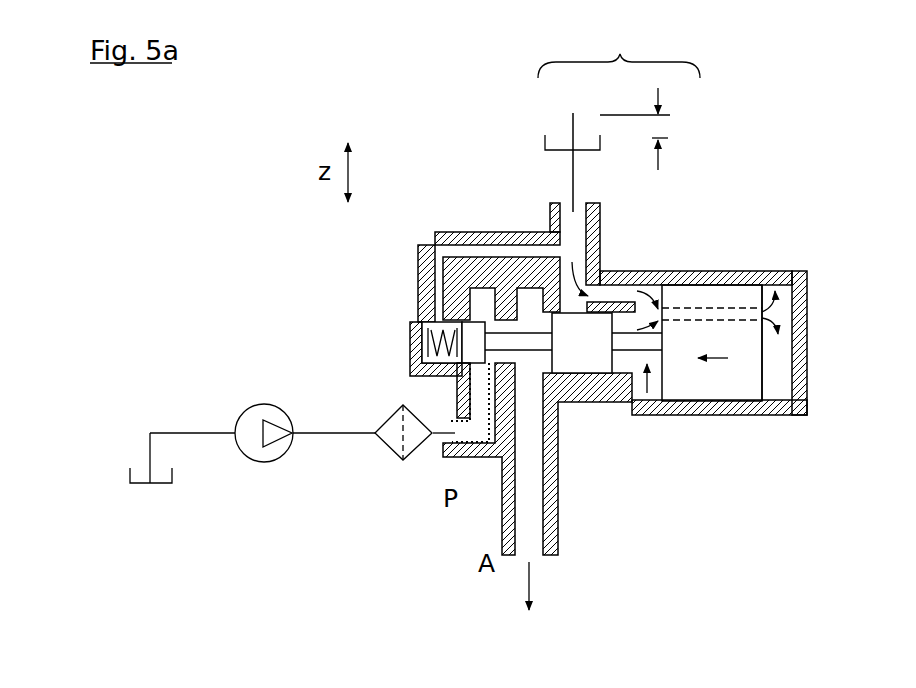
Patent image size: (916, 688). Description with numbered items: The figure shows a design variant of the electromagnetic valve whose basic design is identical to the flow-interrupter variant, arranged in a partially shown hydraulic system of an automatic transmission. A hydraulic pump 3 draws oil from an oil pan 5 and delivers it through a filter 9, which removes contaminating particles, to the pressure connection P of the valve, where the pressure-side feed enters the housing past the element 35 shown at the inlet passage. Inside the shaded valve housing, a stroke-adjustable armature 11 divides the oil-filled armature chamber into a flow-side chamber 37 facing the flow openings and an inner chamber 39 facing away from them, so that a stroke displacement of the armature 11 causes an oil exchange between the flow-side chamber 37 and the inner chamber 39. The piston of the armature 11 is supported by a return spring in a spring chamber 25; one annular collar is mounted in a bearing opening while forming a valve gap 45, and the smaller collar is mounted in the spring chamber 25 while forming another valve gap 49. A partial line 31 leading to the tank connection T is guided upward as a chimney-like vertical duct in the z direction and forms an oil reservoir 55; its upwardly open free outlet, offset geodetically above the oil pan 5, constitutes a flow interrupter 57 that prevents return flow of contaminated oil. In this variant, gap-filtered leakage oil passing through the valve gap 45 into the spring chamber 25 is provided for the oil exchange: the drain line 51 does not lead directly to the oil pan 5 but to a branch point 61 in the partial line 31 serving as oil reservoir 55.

The hydraulic pump 3 is at (272, 462).
The oil pan 5 is at (160, 483).
The filter 9 is at (387, 453).
The armature 11 is at (743, 298).
The spring chamber 25 is at (420, 323).
The partial line 31 is at (588, 224).
The check valve 35 is at (460, 412).
The flow-side chamber 37 is at (645, 395).
The inner chamber 39 is at (773, 364).
The valve gap 45 is at (568, 380).
The valve gap 49 is at (466, 365).
The drain line 51 is at (430, 278).
The oil reservoir 55 is at (586, 251).
The flow interrupter 57 is at (630, 118).
The branch point 61 is at (557, 241).